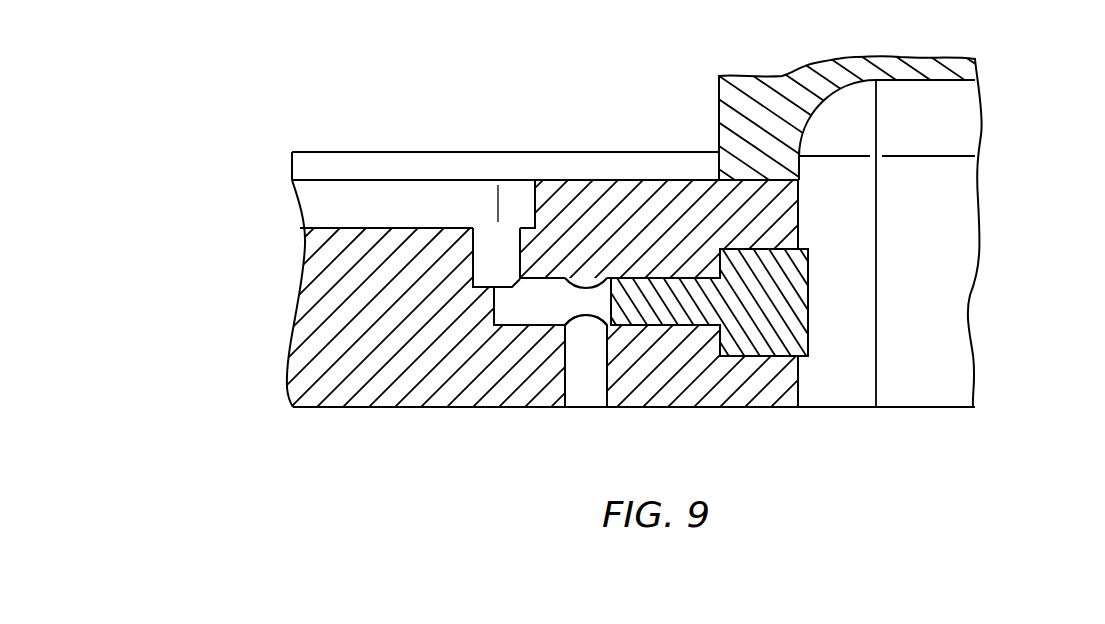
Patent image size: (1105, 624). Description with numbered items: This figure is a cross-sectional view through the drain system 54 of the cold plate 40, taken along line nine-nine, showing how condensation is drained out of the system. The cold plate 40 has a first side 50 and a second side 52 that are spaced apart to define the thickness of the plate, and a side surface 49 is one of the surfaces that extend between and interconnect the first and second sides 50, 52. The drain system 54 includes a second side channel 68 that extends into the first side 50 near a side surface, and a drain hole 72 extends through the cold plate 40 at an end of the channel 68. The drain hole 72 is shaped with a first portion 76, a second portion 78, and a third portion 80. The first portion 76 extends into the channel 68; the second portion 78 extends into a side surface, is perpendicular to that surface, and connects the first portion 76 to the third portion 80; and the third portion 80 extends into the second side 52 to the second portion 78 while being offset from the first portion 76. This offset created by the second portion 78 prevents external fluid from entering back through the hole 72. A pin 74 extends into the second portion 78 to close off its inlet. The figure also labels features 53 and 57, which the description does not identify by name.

The cold plate 40 is at (278, 63).
The side surface 49 is at (800, 219).
The first side 50 is at (585, 170).
The second side 52 is at (673, 407).
The top surface 53 is at (650, 150).
The drain system 54 is at (400, 125).
The interface 57 is at (630, 183).
The second side channel 68 is at (367, 198).
The drain hole 72 is at (507, 208).
The pin 74 is at (813, 289).
The first portion 76 is at (472, 262).
The second portion 78 is at (512, 318).
The third portion 80 is at (585, 408).